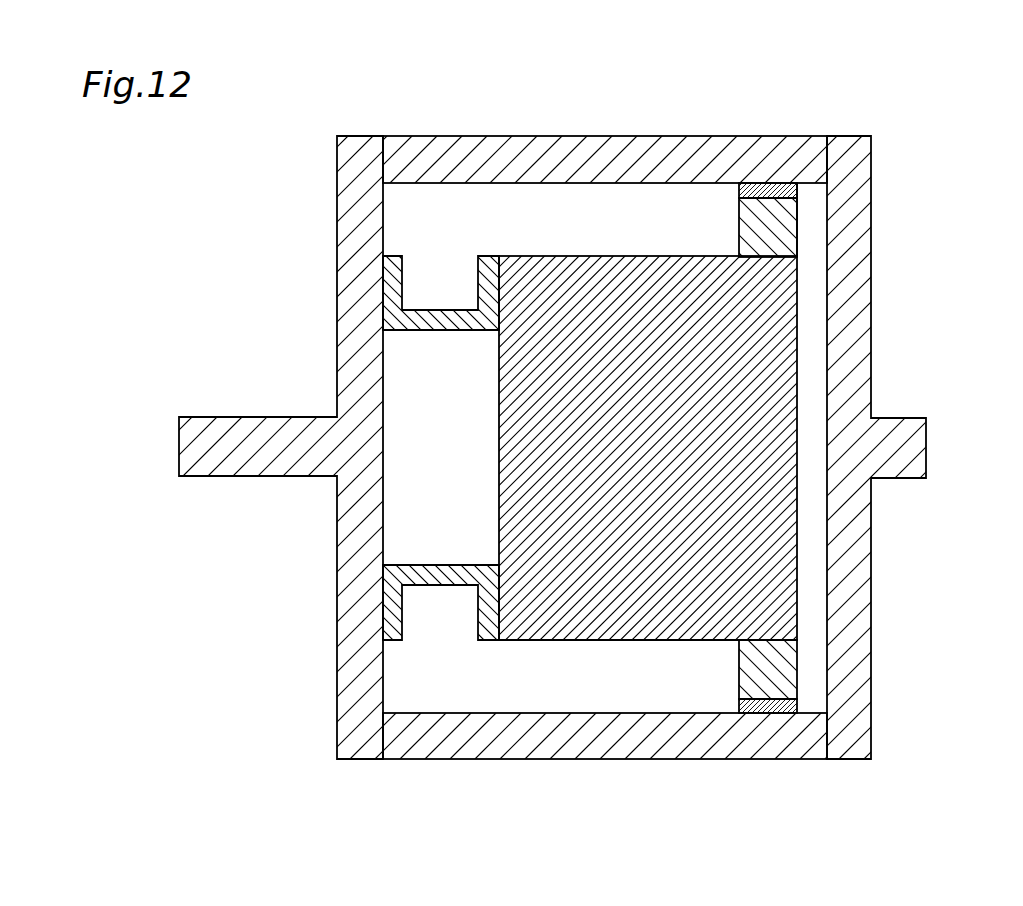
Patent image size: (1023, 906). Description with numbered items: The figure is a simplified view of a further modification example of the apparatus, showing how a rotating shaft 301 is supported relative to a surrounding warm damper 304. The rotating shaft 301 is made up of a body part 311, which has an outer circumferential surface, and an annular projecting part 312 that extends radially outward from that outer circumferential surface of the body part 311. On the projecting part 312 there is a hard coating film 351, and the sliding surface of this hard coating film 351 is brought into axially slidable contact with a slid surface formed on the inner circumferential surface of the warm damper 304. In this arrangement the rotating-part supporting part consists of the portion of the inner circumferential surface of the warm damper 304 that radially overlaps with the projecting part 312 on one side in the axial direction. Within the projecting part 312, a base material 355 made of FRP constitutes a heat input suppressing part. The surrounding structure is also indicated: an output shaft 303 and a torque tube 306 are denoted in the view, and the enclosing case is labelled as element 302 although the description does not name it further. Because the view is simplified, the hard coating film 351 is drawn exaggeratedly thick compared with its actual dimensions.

The rotating shaft 301 is at (762, 570).
The housing 302 is at (868, 320).
The output shaft 303 is at (356, 602).
The warm damper 304 is at (600, 158).
The torque tube 306 is at (442, 318).
The body part 311 is at (645, 602).
The projecting part 312 is at (780, 226).
The hard coating film 351 is at (796, 190).
The base material 355 is at (763, 217).